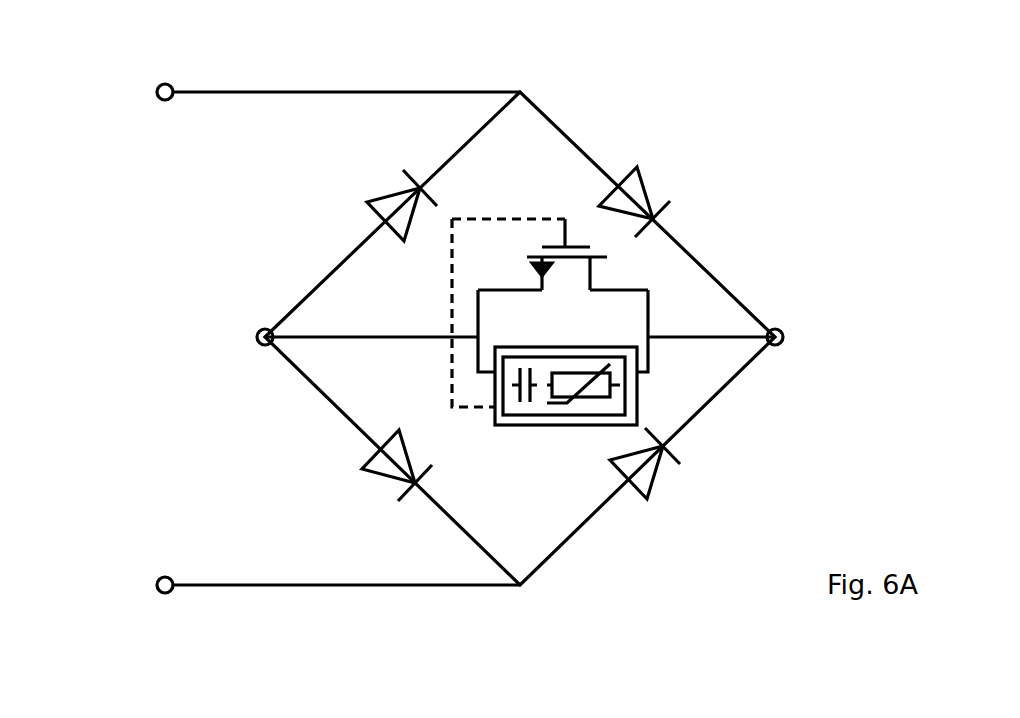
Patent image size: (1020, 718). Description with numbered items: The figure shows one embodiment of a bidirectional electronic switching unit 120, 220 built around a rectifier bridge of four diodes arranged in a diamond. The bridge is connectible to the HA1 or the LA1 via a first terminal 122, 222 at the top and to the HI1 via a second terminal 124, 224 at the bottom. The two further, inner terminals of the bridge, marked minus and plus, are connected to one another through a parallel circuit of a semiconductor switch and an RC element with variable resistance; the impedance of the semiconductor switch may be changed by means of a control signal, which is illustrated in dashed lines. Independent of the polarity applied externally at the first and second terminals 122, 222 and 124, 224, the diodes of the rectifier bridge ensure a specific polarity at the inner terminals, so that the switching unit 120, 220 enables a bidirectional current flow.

The bidirectional electronic switching unit 120 is at (519, 337).
The bidirectional electronic switching unit 220 is at (861, 112).
The first terminal 122 is at (109, 54).
The first terminal 222 is at (156, 90).
The second terminal 124 is at (109, 623).
The second terminal 224 is at (157, 594).